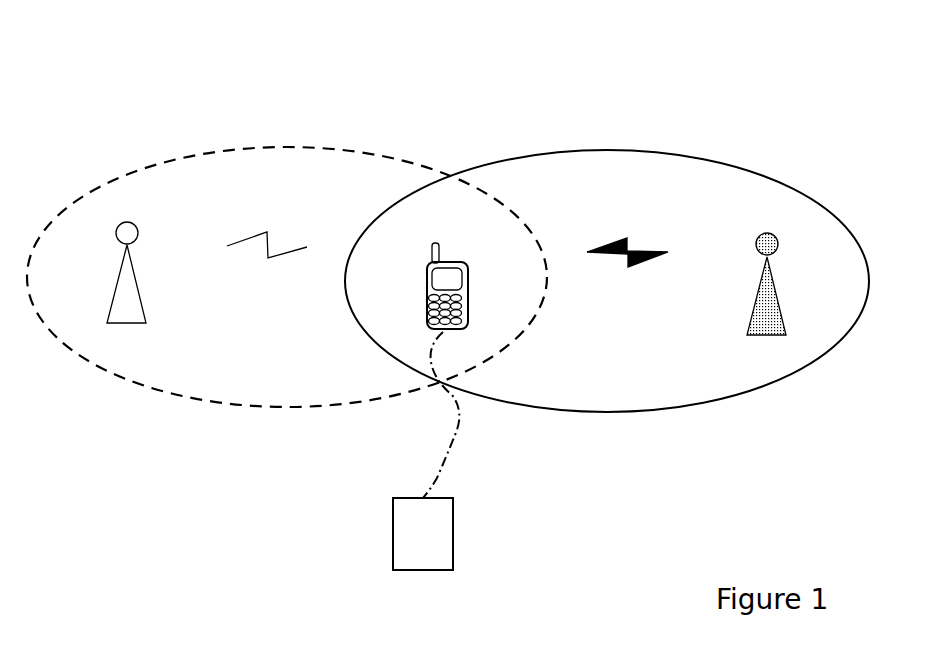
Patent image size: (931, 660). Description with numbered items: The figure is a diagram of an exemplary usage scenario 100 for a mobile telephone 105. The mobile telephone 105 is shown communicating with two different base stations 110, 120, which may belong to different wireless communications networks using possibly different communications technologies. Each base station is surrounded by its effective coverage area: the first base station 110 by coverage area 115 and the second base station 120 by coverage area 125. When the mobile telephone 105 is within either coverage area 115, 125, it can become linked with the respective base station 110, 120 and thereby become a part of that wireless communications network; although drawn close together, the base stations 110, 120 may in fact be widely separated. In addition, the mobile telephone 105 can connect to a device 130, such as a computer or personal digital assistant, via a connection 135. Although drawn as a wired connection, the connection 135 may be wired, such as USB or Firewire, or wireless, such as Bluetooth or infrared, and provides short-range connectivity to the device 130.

The usage scenario 100 is at (140, 78).
The mobile telephone 105 is at (468, 290).
The base station 110 is at (112, 282).
The coverage area 115 is at (280, 146).
The base station 120 is at (808, 276).
The coverage area 125 is at (648, 131).
The device 130 is at (455, 533).
The connection 135 is at (433, 475).